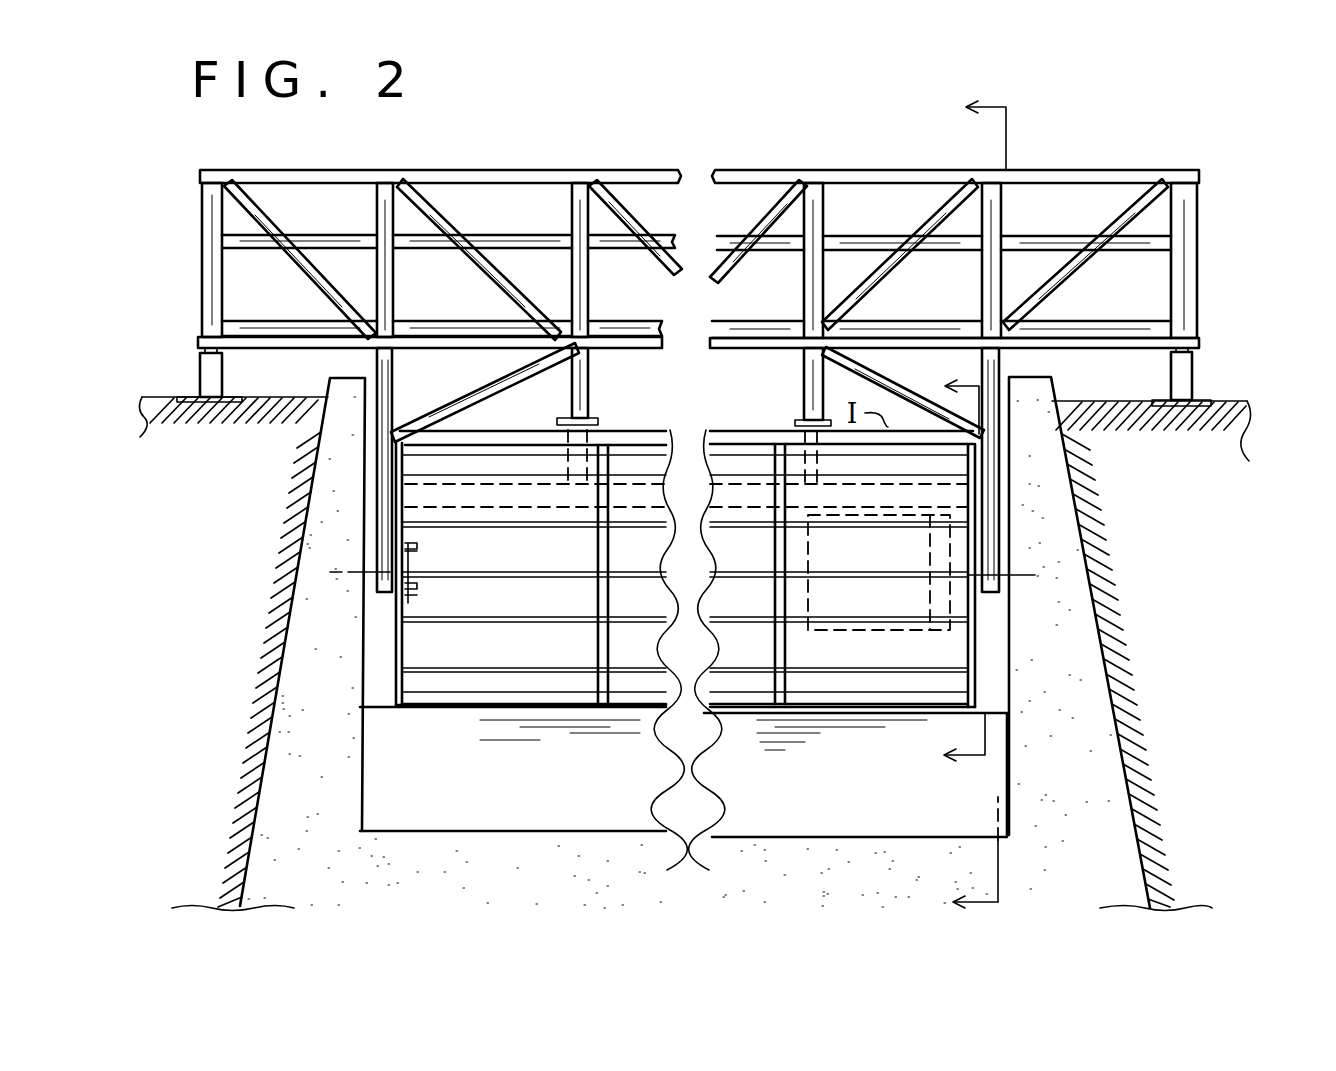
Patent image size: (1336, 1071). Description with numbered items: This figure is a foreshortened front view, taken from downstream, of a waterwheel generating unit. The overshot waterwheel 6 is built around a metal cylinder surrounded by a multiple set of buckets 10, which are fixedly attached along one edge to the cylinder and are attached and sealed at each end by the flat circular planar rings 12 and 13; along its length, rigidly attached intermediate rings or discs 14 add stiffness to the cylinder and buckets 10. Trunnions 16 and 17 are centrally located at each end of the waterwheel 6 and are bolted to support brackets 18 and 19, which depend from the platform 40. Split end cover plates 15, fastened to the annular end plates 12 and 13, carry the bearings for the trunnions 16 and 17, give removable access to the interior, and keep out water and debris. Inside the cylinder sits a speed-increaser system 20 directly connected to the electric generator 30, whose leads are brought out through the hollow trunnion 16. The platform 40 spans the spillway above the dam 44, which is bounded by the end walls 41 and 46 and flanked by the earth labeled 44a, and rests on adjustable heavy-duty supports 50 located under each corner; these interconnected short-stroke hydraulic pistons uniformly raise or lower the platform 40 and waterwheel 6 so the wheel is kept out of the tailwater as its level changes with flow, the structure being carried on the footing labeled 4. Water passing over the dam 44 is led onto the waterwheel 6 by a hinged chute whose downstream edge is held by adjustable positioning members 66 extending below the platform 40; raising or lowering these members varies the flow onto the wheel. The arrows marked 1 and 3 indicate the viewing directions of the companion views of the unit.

The section line 1 is at (965, 504).
The section line 3 is at (949, 566).
The foundation footing 4 is at (993, 712).
The overshot waterwheel 6 is at (472, 440).
The buckets 10 is at (684, 552).
The planar ring 12 is at (972, 660).
The planar ring 13 is at (400, 667).
The intermediate rings and/or discs 14 is at (602, 640).
The split end cover plates 15 is at (397, 622).
The trunnion 16 is at (985, 567).
The trunnion 17 is at (390, 563).
The support bracket 18 is at (993, 478).
The support bracket 19 is at (382, 488).
The speed-increaser system 20 is at (797, 553).
The electric generator 30 is at (895, 565).
The platform 40 is at (969, 320).
The end wall 41 is at (292, 772).
The dam 44 is at (457, 502).
The earth backfill 44a is at (694, 654).
The end wall 46 is at (1059, 797).
The adjustable heavy-duty supports 50 is at (222, 377).
The adjustable positioning members 66 is at (592, 387).